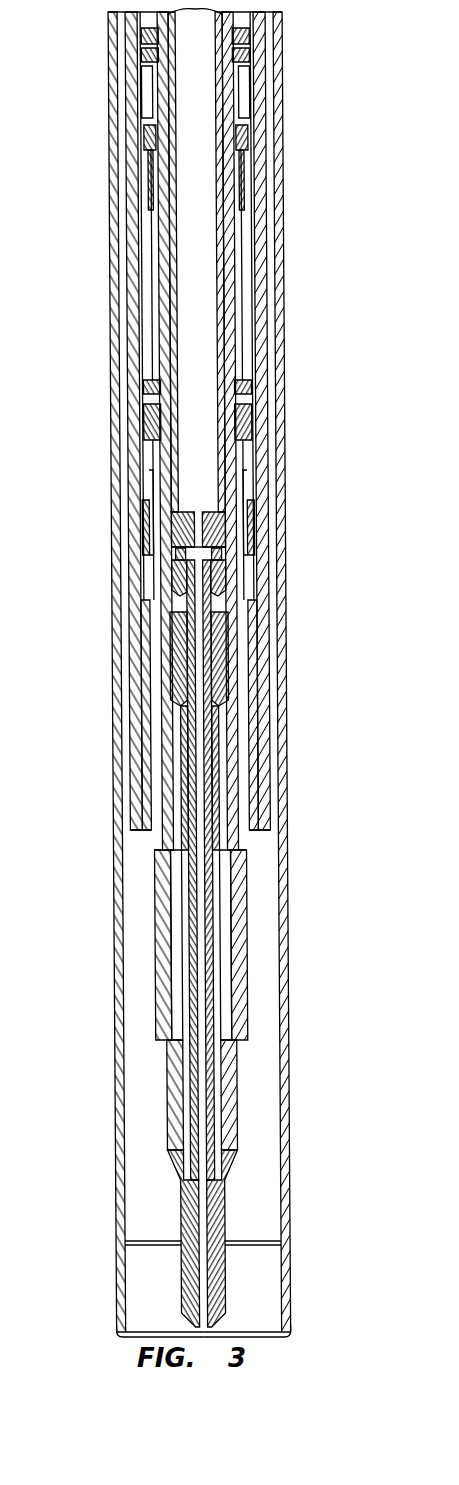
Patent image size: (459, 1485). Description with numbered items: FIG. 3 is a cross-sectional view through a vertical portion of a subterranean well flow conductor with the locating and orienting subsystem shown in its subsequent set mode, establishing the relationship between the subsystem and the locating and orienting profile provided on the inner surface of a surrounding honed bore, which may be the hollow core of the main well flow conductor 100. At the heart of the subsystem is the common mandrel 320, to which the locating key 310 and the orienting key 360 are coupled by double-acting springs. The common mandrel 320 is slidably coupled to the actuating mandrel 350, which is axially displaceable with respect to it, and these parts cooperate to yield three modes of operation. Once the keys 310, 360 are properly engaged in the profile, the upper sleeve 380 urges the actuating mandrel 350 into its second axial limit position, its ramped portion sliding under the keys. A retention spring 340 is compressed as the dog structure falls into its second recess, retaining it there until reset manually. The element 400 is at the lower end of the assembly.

The main well flow conductor 100 is at (120, 938).
The locating key 310 is at (140, 505).
The common mandrel 320 is at (248, 284).
The retention spring 340 is at (143, 147).
The actuating mandrel 350 is at (140, 410).
The orienting key 360 is at (257, 535).
The upper sleeve 380 is at (143, 91).
The bottom sub 400 is at (267, 1338).